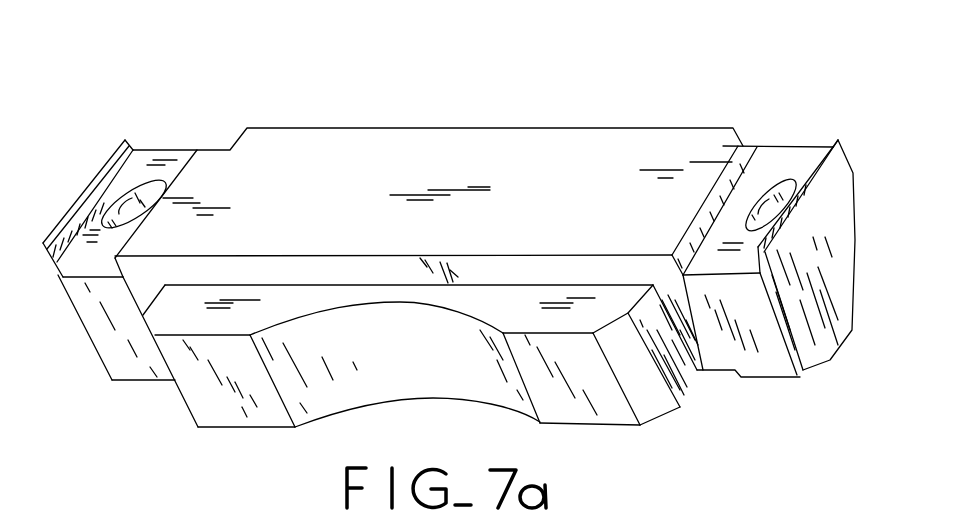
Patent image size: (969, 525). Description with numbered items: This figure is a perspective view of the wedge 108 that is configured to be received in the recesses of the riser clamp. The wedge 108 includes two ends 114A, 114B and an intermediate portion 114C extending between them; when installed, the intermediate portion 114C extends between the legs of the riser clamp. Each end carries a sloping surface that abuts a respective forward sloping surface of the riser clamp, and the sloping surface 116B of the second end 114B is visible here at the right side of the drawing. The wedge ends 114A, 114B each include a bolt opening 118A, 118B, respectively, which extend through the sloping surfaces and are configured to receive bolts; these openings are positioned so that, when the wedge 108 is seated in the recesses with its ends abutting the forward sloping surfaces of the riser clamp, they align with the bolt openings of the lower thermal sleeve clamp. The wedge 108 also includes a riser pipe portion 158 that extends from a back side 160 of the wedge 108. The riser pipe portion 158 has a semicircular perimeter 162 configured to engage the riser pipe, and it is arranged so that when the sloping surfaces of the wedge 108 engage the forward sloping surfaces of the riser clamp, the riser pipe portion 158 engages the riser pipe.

The wedge 108 is at (590, 68).
The end 114A is at (153, 157).
The end 114B is at (800, 157).
The intermediate portion 114C is at (400, 160).
The sloping surface 116B is at (855, 247).
The bolt opening 118A is at (123, 205).
The bolt opening 118B is at (769, 187).
The riser pipe portion 158 is at (207, 368).
The back side 160 is at (102, 323).
The semicircular perimeter 162 is at (372, 378).